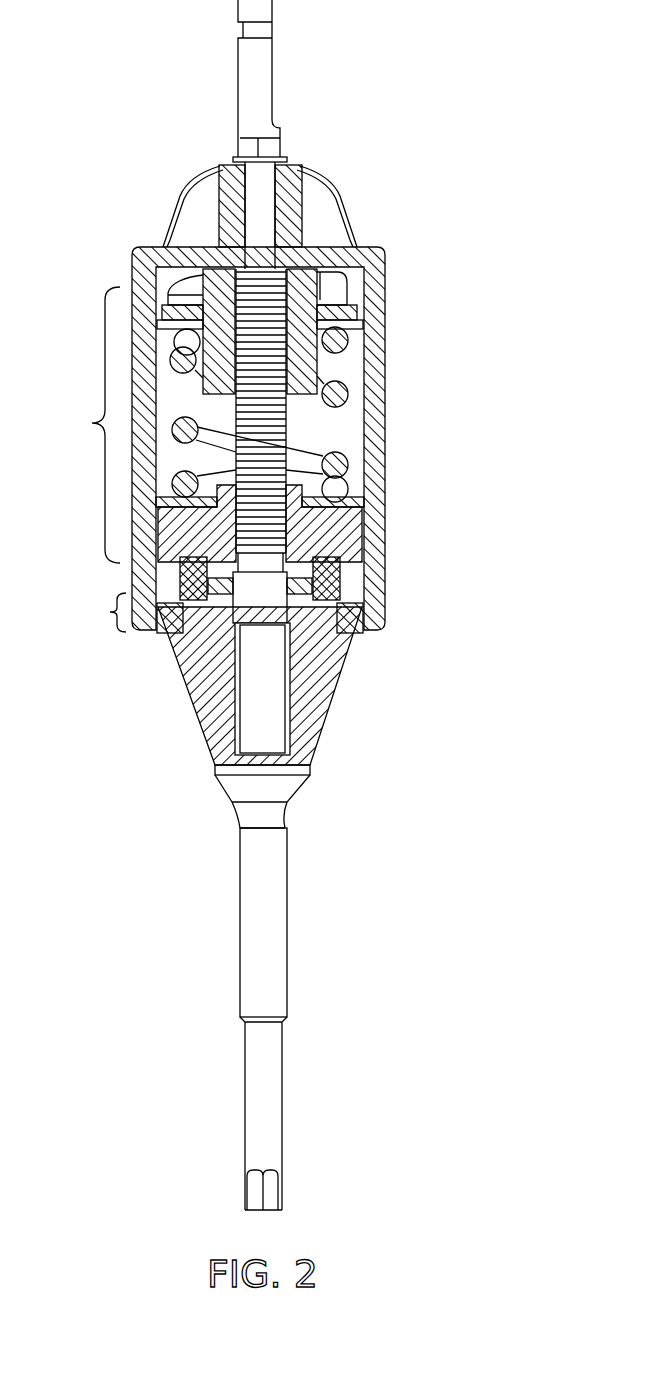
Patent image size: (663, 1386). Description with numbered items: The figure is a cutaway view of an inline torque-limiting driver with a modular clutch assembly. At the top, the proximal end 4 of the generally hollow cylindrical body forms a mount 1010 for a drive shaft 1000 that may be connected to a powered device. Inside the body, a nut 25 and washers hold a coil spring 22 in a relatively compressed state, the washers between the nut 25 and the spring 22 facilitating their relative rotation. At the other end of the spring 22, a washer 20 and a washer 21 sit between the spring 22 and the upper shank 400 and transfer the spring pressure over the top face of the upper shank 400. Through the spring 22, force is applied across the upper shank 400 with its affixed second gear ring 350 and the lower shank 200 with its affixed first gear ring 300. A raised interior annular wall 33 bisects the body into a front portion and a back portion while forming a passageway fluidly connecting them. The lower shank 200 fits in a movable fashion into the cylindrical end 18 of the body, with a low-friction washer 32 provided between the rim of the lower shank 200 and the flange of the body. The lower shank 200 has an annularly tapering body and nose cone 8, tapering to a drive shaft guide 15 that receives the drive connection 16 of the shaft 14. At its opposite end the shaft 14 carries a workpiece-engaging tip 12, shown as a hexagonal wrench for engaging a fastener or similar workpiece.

The proximal end 4 is at (181, 163).
The drive shaft 1000 is at (260, 80).
The mount 1010 is at (288, 181).
The nut 25 is at (192, 287).
The spring 22 is at (348, 392).
The washer 21 is at (357, 502).
The washer 20 is at (362, 509).
The upper shank 400 is at (340, 532).
The raised interior annular wall 33 is at (157, 593).
The washer 32 is at (358, 590).
The second gear ring 350 is at (160, 626).
The first gear ring 300 is at (165, 636).
The cylindrical end 18 is at (378, 625).
The lower shank 200 is at (282, 687).
The drive shaft guide 15 is at (288, 702).
The drive connection 16 is at (267, 725).
The nose cone 8 is at (194, 723).
The shaft 14 is at (258, 937).
The workpiece-engaging tip 12 is at (268, 1188).